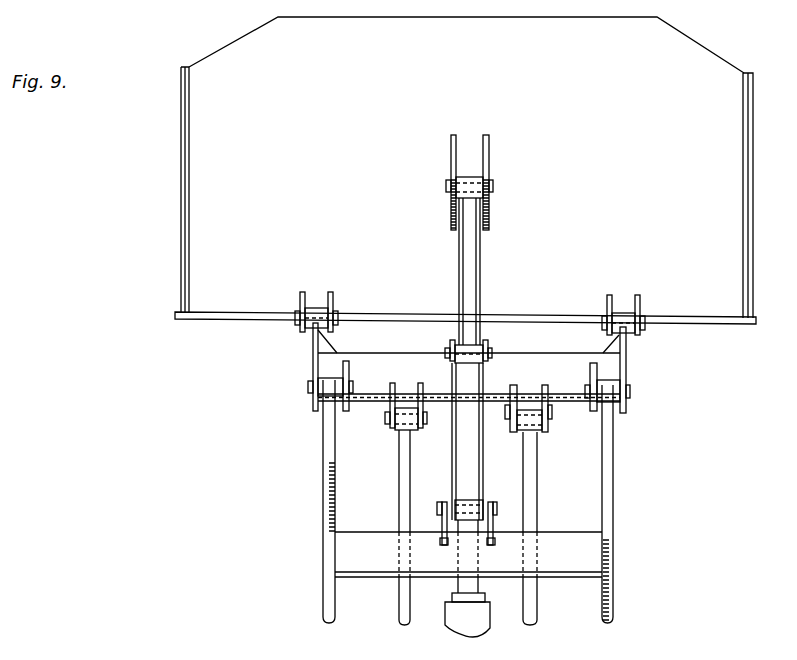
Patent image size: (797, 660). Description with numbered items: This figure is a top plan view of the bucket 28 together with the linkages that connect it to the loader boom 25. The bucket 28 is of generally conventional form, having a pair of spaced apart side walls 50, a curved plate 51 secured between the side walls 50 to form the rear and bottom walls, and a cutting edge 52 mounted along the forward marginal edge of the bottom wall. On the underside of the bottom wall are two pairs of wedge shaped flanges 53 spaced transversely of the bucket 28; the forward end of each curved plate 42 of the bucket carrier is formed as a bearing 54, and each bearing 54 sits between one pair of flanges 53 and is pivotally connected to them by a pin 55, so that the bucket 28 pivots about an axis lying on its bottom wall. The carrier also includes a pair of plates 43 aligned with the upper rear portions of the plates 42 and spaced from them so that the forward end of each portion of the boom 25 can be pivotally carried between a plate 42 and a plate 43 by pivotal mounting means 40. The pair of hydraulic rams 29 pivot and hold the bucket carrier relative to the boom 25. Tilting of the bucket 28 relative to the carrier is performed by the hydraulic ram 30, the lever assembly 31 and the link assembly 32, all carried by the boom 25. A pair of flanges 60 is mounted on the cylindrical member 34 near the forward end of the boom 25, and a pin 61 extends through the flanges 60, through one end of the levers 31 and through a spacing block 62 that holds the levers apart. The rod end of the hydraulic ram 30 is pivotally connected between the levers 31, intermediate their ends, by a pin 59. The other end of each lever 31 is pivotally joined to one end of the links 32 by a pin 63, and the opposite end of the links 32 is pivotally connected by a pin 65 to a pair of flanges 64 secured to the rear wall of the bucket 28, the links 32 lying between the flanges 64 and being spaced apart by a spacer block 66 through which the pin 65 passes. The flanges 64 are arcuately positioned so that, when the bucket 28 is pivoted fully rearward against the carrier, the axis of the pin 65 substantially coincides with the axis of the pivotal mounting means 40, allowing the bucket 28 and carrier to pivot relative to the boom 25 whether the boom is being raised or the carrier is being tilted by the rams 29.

The bucket 28 is at (206, 116).
The side walls 50 is at (179, 210).
The curved plate 51 is at (208, 243).
The cutting edge 52 is at (234, 328).
The wedge shaped flanges 53 is at (330, 292).
The bearing 54 is at (322, 311).
The pin 55 is at (297, 326).
The plates 42 is at (312, 360).
The pivotal mounting means 40 is at (312, 383).
The pin 59 is at (494, 390).
The plates 43 is at (349, 366).
The boom 25 is at (318, 503).
The hydraulic rams 29 is at (395, 479).
The cylindrical member 34 is at (572, 526).
The link assembly 32 is at (460, 258).
The spacer block 66 is at (469, 177).
The flanges 64 is at (452, 143).
The pin 65 is at (494, 186).
The pin 63 is at (449, 351).
The lever assembly 31 is at (453, 432).
The pin 61 is at (482, 502).
The spacing block 62 is at (494, 519).
The flanges 60 is at (495, 538).
The hydraulic ram 30 is at (440, 620).